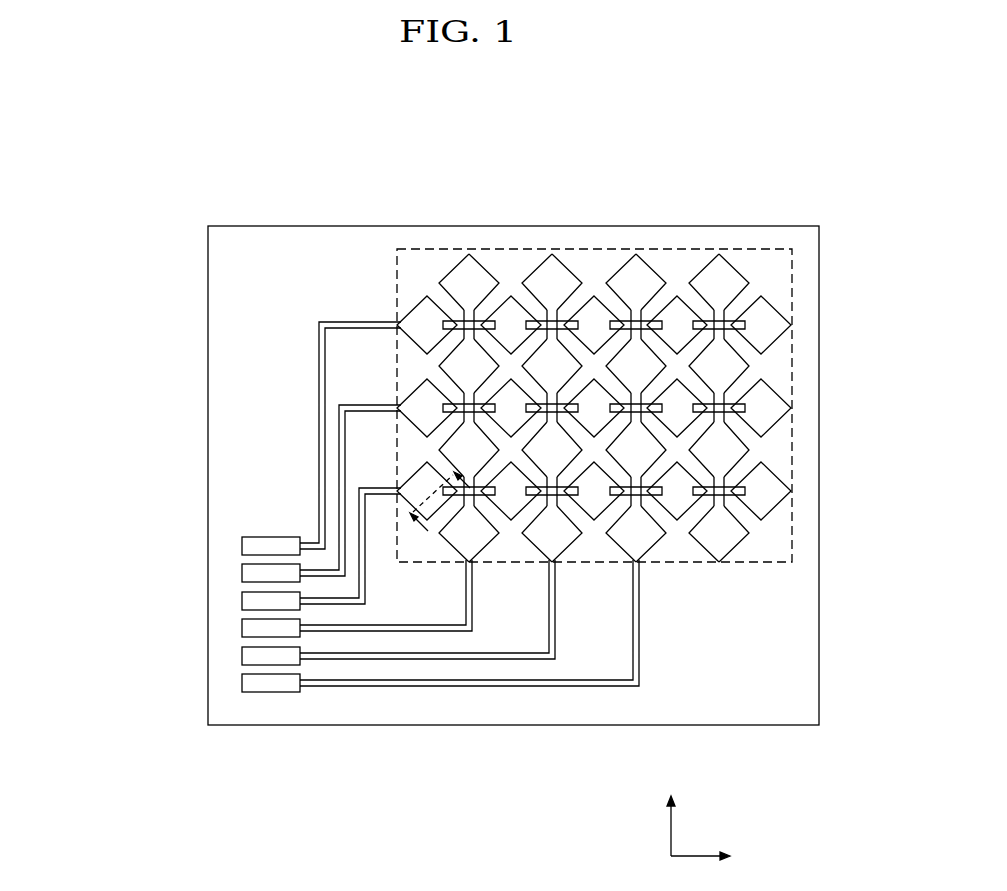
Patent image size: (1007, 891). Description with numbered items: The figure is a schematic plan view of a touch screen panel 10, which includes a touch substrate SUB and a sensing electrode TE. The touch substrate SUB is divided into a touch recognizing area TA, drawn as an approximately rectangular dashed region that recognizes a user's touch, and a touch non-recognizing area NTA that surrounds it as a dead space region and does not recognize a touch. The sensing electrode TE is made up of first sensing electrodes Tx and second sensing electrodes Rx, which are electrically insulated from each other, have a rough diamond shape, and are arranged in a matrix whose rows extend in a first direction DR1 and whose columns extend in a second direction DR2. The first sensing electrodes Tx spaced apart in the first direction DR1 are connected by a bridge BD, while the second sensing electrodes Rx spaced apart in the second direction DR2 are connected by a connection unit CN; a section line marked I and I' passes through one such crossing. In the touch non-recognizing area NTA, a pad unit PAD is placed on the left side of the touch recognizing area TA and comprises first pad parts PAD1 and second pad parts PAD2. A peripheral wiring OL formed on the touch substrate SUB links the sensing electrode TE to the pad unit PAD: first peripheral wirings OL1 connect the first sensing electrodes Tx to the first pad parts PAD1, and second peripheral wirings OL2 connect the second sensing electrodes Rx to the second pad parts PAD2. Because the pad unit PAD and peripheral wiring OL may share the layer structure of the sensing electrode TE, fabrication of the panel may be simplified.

The touch screen panel 10 is at (739, 199).
The touch substrate SUB is at (208, 404).
The touch non-recognizing area NTA is at (368, 265).
The touch recognizing area TA is at (427, 265).
The sensing electrode TE is at (473, 189).
The first sensing electrodes Tx is at (500, 312).
The second sensing electrodes Rx is at (537, 271).
The bridge BD is at (560, 315).
The connection unit CN is at (620, 313).
The pad unit PAD is at (189, 618).
The first pad parts PAD1 is at (242, 546).
The second pad parts PAD2 is at (214, 685).
The peripheral wiring OL is at (469, 563).
The first peripheral wirings OL1 is at (316, 555).
The second peripheral wirings OL2 is at (332, 768).
The section line I is at (431, 514).
The section line I' is at (472, 495).
The first direction DR1 is at (715, 856).
The second direction DR2 is at (670, 816).